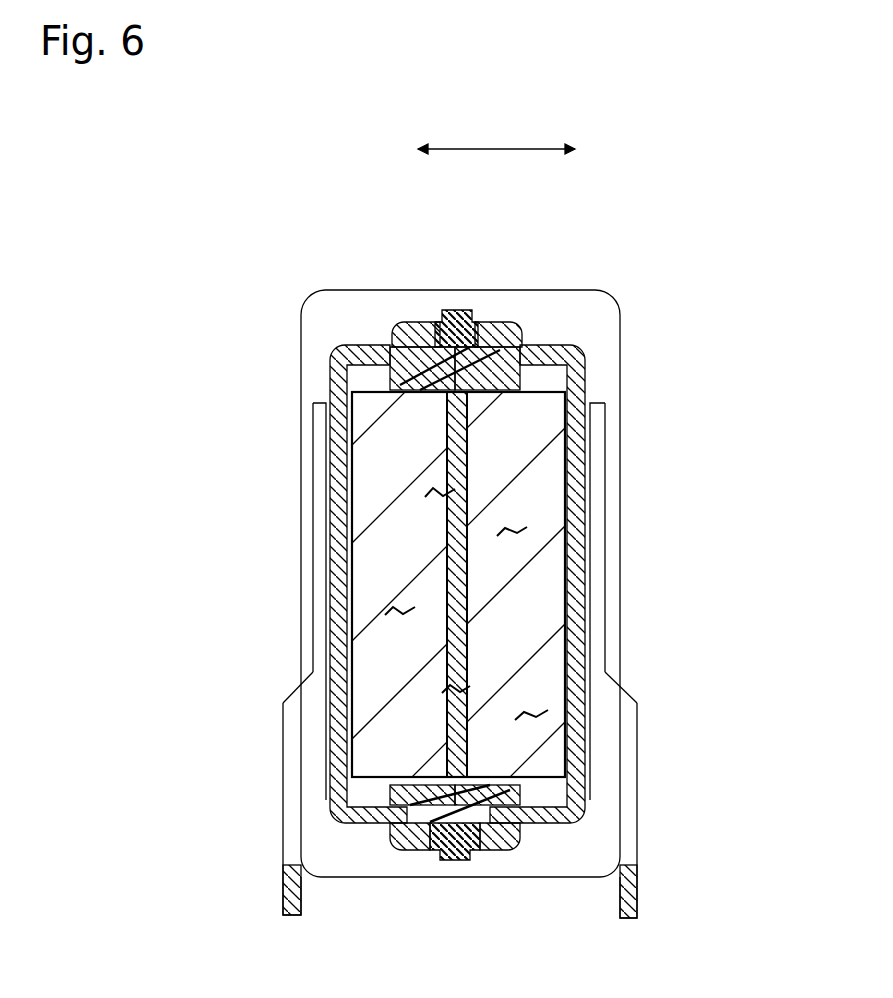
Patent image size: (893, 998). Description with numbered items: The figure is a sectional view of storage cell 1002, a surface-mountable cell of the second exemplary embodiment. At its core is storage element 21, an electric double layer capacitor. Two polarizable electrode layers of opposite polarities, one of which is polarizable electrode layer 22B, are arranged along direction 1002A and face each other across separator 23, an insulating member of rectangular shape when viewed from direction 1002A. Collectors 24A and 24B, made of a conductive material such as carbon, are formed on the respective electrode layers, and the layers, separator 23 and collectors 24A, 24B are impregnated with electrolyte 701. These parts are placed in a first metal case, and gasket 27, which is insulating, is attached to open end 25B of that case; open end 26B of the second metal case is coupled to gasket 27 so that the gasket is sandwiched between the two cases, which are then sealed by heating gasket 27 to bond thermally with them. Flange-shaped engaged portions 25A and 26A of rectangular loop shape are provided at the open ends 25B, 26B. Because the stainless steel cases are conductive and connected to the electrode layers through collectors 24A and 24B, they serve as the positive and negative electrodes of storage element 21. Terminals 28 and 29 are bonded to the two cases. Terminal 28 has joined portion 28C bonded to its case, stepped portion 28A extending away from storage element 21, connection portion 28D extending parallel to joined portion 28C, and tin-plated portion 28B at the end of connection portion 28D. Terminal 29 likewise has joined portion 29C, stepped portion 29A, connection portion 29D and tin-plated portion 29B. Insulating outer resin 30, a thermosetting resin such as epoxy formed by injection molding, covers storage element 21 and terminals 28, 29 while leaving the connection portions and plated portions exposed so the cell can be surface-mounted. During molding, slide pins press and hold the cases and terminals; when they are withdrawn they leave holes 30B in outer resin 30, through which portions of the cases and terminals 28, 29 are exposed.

The storage cell 1002 is at (697, 282).
The direction 1002A is at (460, 149).
The storage element 21 is at (481, 505).
The polarizable electrode layer 22B is at (362, 460).
The separator 23 is at (450, 553).
The collector 24A is at (572, 508).
The collector 24B is at (360, 488).
The engaged portion 25A is at (492, 360).
The open end 25B is at (520, 330).
The engaged portion 26A is at (420, 355).
The open end 26B is at (395, 330).
The gasket 27 is at (444, 310).
The terminal 28 is at (666, 661).
The stepped portion 28A is at (630, 685).
The plated portion 28B is at (637, 900).
The joined portion 28C is at (600, 621).
The connection portion 28D is at (625, 805).
The terminal 29 is at (251, 693).
The stepped portion 29A is at (300, 690).
The plated portion 29B is at (290, 918).
The joined portion 29C is at (318, 621).
The connection portion 29D is at (298, 808).
The insulating outer resin 30 is at (398, 878).
The holes 30B is at (308, 410).
The electrolyte 701 is at (522, 532).